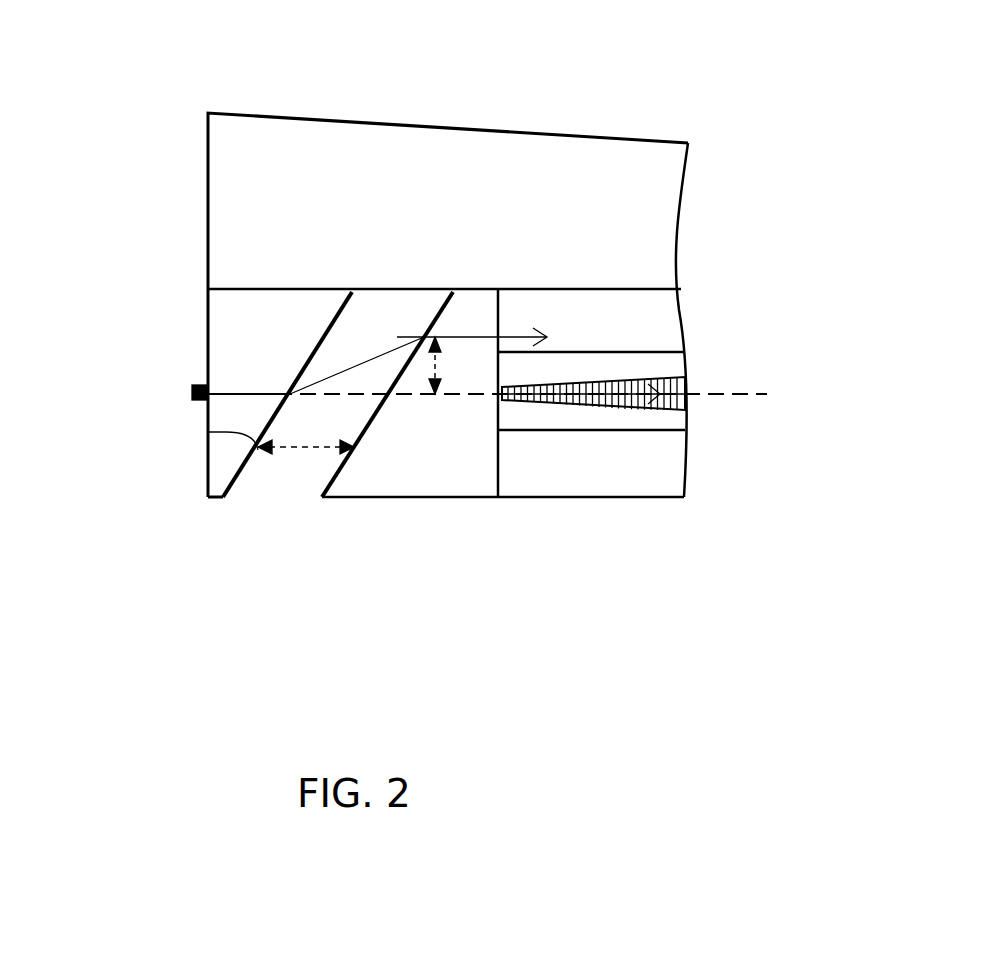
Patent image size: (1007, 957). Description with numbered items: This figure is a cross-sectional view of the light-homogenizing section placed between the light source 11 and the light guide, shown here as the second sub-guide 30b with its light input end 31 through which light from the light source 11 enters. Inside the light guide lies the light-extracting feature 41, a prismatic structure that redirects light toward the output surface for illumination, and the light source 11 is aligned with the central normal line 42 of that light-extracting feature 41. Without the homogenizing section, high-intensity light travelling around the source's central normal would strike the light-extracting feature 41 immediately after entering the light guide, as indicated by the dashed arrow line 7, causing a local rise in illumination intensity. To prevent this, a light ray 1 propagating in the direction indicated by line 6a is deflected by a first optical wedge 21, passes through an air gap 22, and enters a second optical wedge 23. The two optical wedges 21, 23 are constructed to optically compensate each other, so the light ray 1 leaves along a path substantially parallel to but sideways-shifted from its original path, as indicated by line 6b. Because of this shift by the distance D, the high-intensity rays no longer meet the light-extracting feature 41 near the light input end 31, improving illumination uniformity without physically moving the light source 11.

The light ray 1 is at (290, 394).
The line indicating original propagation direction 6a is at (365, 387).
The line indicating shifted propagation path 6b is at (463, 335).
The dashed arrow line 7 is at (640, 388).
The light source 11 is at (192, 400).
The first optical wedge 21 is at (224, 497).
The air gap 22 is at (292, 463).
The second optical wedge 23 is at (370, 497).
The second sub-guide 30b is at (240, 177).
The light input end 31 is at (500, 462).
The light-extracting feature 41 is at (692, 400).
The central normal line 42 is at (737, 385).